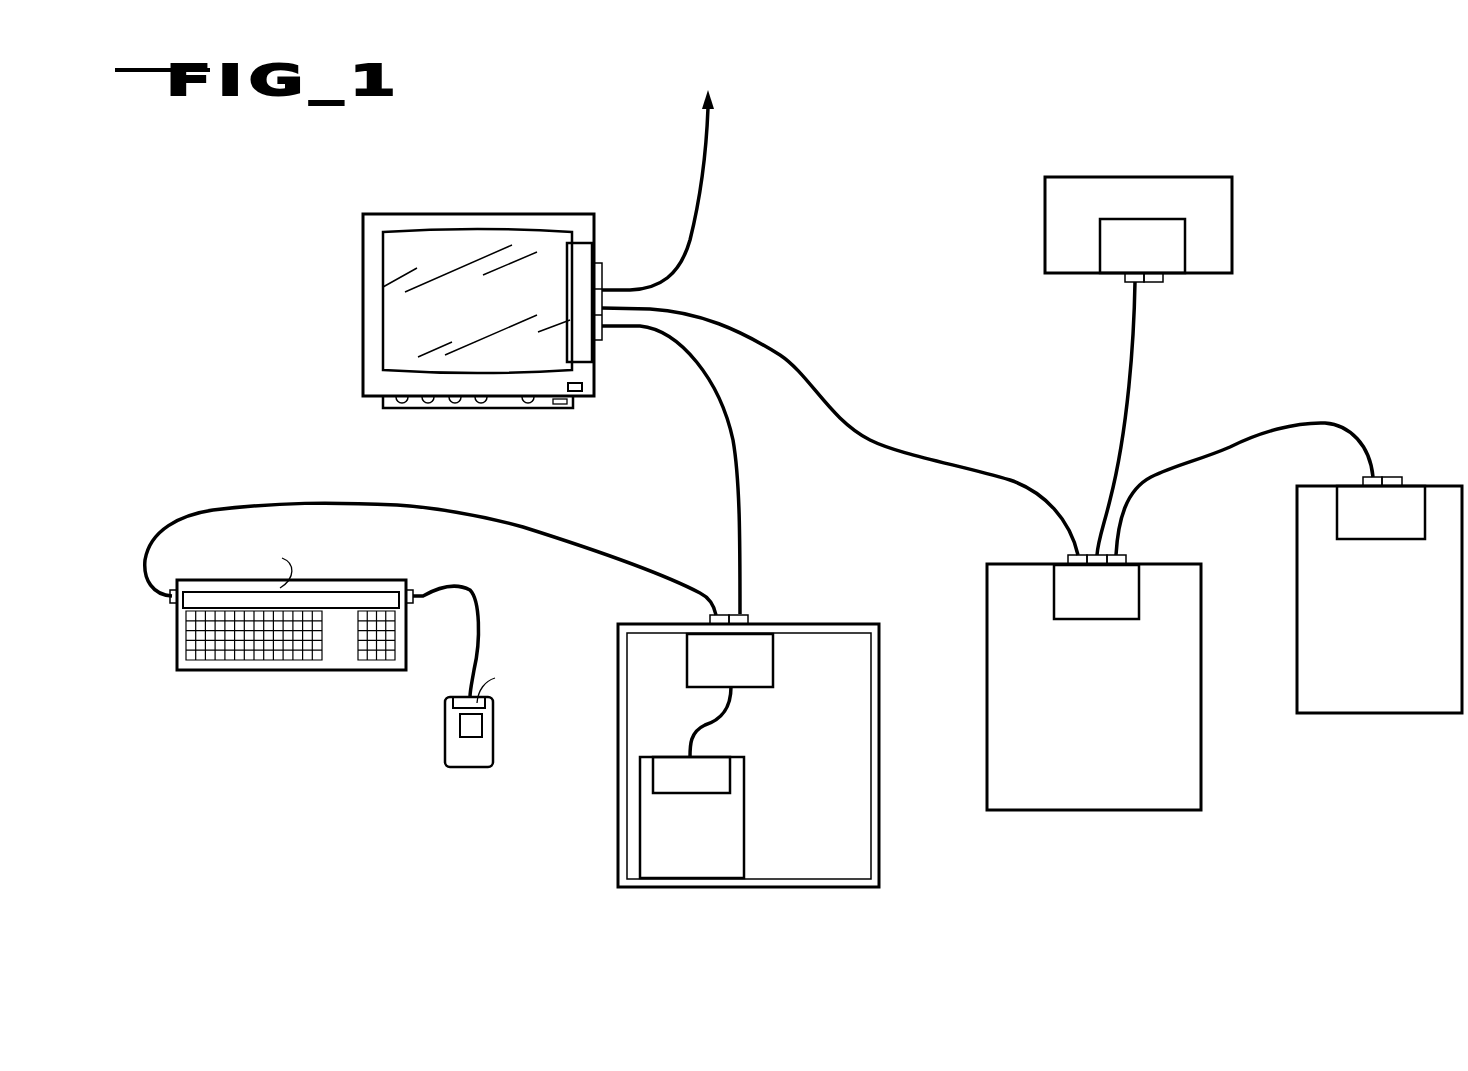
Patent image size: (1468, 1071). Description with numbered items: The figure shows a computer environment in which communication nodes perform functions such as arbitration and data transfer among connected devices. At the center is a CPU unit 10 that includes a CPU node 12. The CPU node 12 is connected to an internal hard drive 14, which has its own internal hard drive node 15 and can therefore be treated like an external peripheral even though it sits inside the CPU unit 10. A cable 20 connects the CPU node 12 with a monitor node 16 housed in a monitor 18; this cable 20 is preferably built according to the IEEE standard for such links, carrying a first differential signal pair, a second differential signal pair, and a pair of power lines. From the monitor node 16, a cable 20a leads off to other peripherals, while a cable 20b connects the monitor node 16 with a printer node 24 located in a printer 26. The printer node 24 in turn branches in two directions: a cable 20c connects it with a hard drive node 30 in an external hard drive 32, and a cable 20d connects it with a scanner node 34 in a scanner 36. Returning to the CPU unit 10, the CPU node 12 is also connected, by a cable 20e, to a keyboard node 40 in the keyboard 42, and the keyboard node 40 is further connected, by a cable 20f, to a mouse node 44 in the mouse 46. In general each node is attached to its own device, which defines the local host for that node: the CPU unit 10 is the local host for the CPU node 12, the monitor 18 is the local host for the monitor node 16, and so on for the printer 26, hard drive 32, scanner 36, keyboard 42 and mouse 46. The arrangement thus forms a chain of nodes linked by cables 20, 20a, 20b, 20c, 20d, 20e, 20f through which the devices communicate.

The CPU unit 10 is at (880, 855).
The CPU node 12 is at (770, 660).
The internal hard drive 14 is at (735, 843).
The internal hard drive node 15 is at (728, 773).
The monitor node 16 is at (598, 245).
The monitor 18 is at (363, 271).
The cable 20 is at (742, 472).
The cable 20a is at (698, 208).
The cable 20b is at (798, 360).
The cable 20c is at (1122, 374).
The cable 20d is at (1250, 436).
The cable 20e is at (500, 523).
The cable 20f is at (483, 609).
The printer node 24 is at (1065, 578).
The printer 26 is at (1097, 811).
The hard drive node 30 is at (1168, 263).
The hard drive 32 is at (1172, 177).
The scanner node 34 is at (1353, 495).
The scanner 36 is at (1370, 713).
The keyboard node 40 is at (323, 588).
The keyboard 42 is at (208, 672).
The mouse node 44 is at (495, 706).
The mouse 46 is at (483, 752).